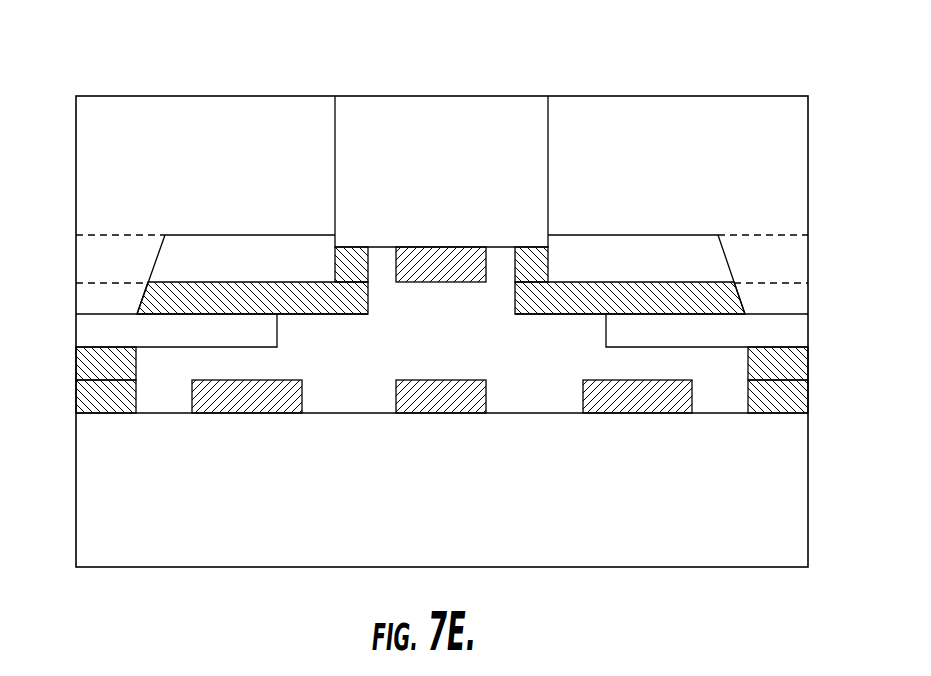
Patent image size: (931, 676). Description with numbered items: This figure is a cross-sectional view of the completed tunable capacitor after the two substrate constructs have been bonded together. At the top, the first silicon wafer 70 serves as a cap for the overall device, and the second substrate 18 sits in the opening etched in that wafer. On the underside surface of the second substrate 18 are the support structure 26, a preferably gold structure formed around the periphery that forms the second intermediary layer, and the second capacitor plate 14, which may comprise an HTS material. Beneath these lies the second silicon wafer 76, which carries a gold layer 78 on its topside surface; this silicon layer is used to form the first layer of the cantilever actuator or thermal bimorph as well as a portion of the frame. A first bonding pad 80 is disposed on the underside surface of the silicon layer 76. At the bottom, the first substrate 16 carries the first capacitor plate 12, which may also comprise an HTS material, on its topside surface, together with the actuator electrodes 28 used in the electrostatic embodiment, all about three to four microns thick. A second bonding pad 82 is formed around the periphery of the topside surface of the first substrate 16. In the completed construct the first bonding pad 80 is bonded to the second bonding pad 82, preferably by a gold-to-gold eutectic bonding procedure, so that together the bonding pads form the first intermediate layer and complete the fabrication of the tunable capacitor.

The first capacitor plate 12 is at (457, 395).
The second capacitor plate 14 is at (456, 266).
The first substrate 16 is at (782, 480).
The second substrate 18 is at (468, 157).
The support structure 26 is at (347, 271).
The actuator electrodes 28 is at (243, 402).
The first silicon wafer 70 is at (782, 181).
The second silicon wafer 76 is at (103, 333).
The gold layer 78 is at (300, 298).
The first bonding pad 80 is at (120, 375).
The second bonding pad 82 is at (75, 395).